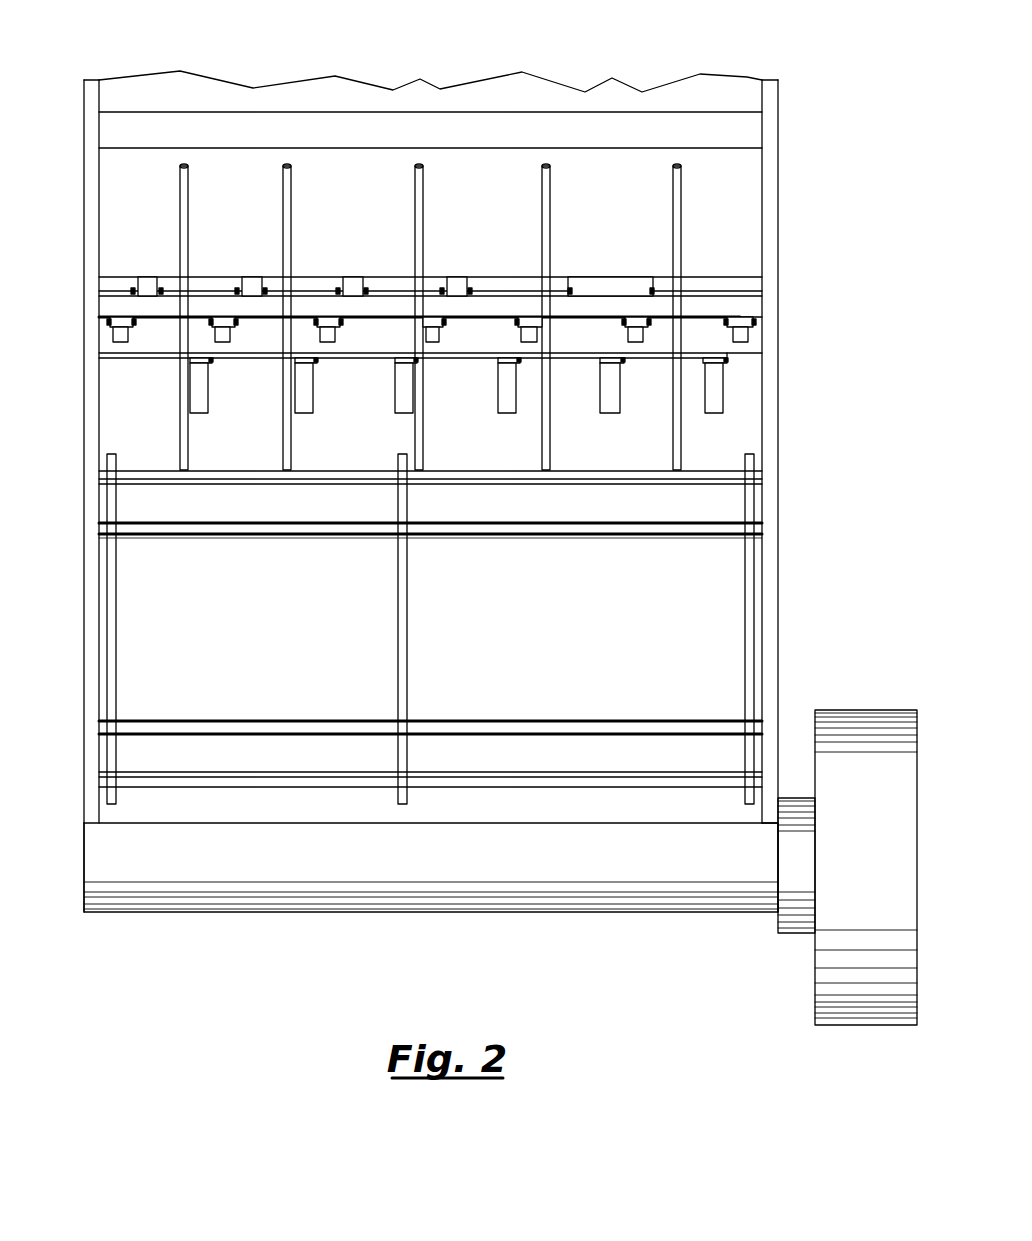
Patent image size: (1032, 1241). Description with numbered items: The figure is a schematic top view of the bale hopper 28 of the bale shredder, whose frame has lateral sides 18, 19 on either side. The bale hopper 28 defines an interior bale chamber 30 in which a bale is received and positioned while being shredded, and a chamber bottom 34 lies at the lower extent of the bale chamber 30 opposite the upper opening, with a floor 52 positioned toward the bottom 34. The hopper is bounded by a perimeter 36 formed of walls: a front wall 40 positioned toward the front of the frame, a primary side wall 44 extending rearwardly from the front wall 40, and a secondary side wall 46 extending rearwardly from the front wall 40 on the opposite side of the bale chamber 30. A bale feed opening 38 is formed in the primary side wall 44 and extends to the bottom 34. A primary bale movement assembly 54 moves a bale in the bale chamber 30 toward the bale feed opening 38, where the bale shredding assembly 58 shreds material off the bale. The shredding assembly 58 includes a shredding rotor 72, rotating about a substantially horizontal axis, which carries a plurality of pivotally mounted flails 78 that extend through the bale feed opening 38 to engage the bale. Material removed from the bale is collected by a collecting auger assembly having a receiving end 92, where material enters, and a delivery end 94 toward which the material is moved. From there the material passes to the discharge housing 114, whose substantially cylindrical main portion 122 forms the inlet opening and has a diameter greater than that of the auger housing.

The lateral side 19 is at (318, 65).
The primary side wall 44 is at (477, 99).
The bale feed opening 38 is at (598, 148).
The perimeter 36 is at (769, 312).
The shredding rotor 72 is at (702, 340).
The flails 78 is at (713, 388).
The bale shredding assembly 58 is at (735, 397).
The front wall 40 is at (778, 473).
The primary bale movement assembly 54 is at (708, 534).
The bale hopper 28 is at (778, 580).
The bale chamber 30 is at (698, 607).
The floor 52 is at (715, 658).
The chamber bottom 34 is at (180, 627).
The secondary side wall 46 is at (325, 885).
The lateral side 18 is at (485, 913).
The receiving end 92 is at (111, 915).
The delivery end 94 is at (745, 913).
The main portion 122 is at (837, 1028).
The discharge housing 114 is at (880, 1028).